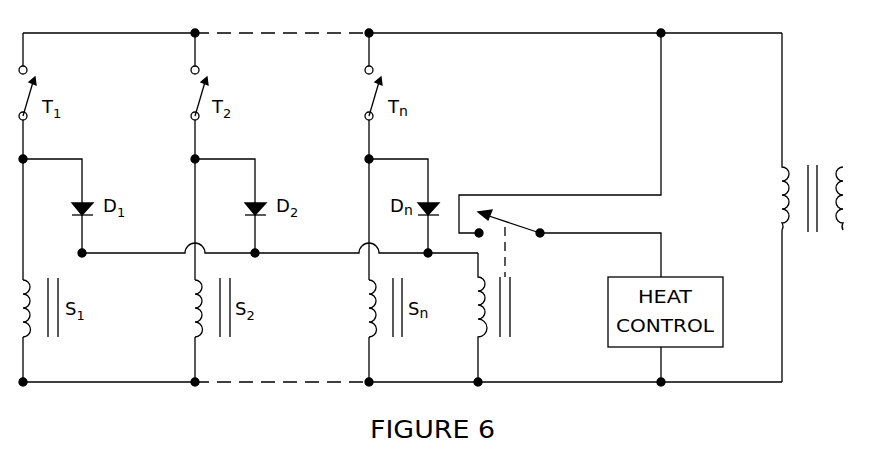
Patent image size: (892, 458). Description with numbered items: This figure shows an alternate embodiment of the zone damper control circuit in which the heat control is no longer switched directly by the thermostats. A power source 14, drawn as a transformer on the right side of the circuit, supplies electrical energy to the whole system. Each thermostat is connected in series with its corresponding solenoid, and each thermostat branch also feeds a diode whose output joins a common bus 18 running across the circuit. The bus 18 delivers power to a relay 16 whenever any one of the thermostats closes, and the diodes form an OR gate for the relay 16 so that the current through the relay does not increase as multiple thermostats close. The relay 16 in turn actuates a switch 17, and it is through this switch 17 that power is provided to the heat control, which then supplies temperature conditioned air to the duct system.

The power source 14 is at (831, 232).
The relay 16 is at (478, 323).
The switch 17 is at (534, 232).
The bus 18 is at (303, 253).